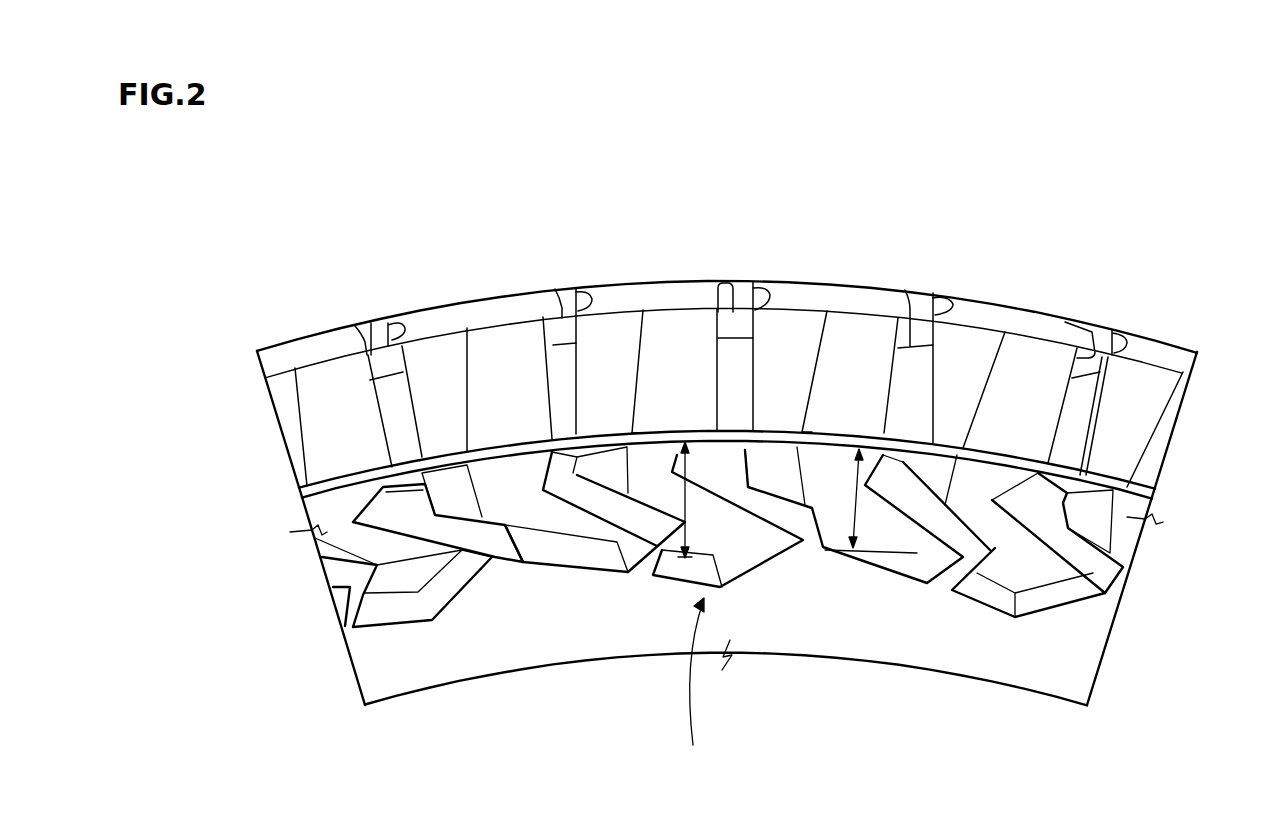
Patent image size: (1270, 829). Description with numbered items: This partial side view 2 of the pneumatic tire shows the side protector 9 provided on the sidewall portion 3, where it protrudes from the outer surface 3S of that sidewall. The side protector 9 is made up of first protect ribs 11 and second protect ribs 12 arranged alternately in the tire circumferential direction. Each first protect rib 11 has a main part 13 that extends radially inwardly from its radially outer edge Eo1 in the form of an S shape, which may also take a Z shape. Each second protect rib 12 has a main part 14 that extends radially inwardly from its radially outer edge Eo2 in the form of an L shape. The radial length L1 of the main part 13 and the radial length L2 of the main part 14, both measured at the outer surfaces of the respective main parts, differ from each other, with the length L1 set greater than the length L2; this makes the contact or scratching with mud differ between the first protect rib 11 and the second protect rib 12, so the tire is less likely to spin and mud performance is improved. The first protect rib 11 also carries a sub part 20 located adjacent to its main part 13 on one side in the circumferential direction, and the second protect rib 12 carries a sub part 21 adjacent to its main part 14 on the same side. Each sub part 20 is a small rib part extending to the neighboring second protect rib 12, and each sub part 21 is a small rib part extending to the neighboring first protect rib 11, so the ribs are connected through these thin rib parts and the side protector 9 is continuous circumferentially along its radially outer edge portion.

The stator 2 is at (744, 350).
The sidewall portion 3 is at (1170, 508).
The outer surface 3S is at (1007, 652).
The side protector 9 is at (698, 684).
The first protect rib 11 is at (747, 557).
The second protect rib 12 is at (568, 557).
The main part 13 is at (667, 465).
The main part 14 is at (878, 455).
The sub part 20 is at (603, 455).
The sub part 21 is at (773, 460).
The radially outer edge Eo1 is at (660, 457).
The radially outer edge Eo2 is at (840, 463).
The radial length L1 is at (662, 527).
The radial length L2 is at (826, 550).